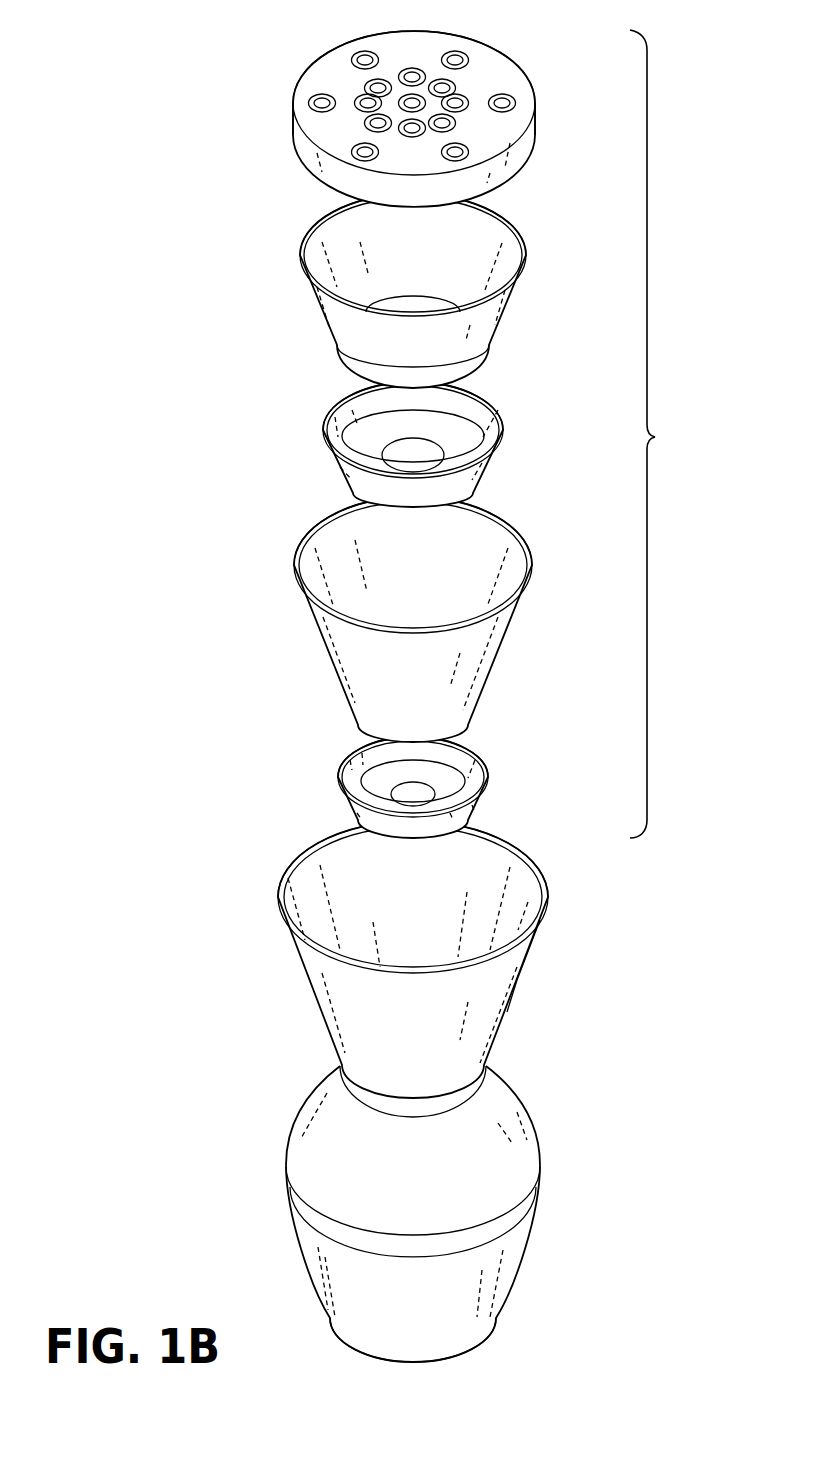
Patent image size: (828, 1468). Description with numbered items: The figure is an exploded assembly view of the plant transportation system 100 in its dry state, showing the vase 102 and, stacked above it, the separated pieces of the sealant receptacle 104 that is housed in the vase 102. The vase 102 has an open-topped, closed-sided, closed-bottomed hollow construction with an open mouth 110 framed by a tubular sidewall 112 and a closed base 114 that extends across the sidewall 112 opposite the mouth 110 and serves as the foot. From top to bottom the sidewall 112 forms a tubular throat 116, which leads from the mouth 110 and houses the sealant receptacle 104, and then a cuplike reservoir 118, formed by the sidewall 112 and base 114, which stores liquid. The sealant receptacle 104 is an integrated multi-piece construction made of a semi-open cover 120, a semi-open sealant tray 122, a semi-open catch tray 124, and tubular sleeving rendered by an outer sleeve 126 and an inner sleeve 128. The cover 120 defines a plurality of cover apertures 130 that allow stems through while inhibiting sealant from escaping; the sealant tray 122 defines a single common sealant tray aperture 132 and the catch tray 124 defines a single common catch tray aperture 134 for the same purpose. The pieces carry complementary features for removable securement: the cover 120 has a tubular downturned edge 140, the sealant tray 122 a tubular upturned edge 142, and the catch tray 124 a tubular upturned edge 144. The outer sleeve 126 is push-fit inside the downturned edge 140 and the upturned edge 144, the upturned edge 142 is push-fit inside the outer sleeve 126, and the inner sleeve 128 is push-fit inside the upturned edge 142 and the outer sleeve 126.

The plant transportation system 100 is at (479, 1214).
The vase 102 is at (475, 959).
The sealant receptacle 104 is at (663, 434).
The open mouth 110 is at (522, 888).
The tubular sidewall 112 is at (507, 1012).
The closed base 114 is at (466, 1352).
The tubular throat 116 is at (517, 980).
The cuplike reservoir 118 is at (540, 1168).
The semi-open cover 120 is at (358, 114).
The semi-open sealant tray 122 is at (342, 438).
The semi-open catch tray 124 is at (335, 771).
The tubular outer sleeve 126 is at (322, 650).
The tubular inner sleeve 128 is at (308, 287).
The cover apertures 130 is at (318, 88).
The sealant tray aperture 132 is at (385, 451).
The catch tray aperture 134 is at (392, 790).
The tubular downturned edge 140 is at (307, 152).
The tubular upturned edge 142 is at (322, 407).
The tubular upturned edge 144 is at (345, 743).